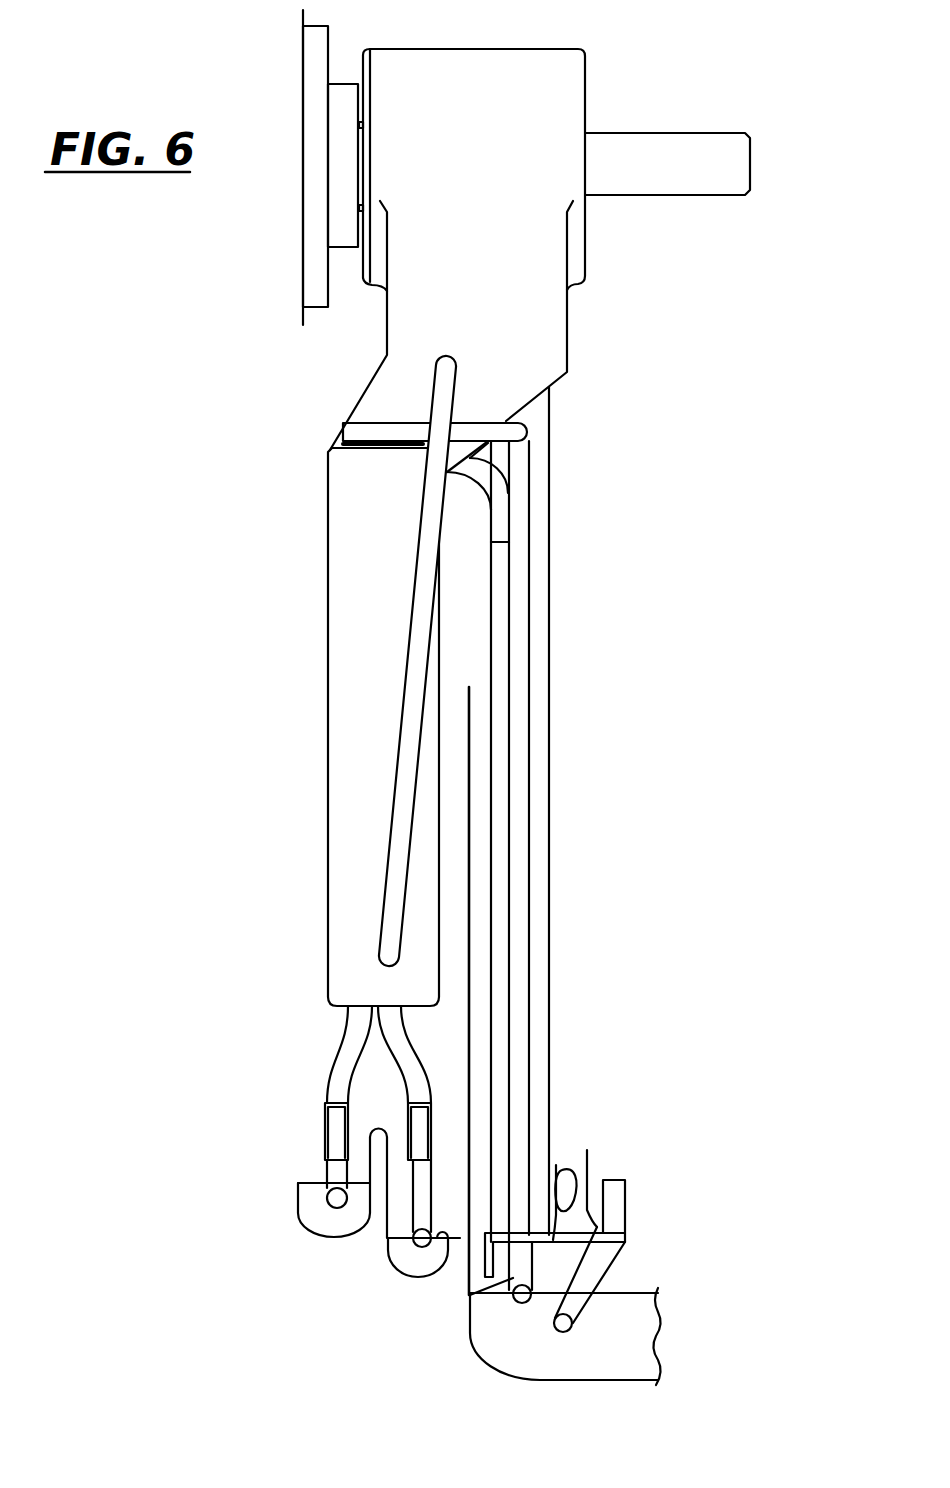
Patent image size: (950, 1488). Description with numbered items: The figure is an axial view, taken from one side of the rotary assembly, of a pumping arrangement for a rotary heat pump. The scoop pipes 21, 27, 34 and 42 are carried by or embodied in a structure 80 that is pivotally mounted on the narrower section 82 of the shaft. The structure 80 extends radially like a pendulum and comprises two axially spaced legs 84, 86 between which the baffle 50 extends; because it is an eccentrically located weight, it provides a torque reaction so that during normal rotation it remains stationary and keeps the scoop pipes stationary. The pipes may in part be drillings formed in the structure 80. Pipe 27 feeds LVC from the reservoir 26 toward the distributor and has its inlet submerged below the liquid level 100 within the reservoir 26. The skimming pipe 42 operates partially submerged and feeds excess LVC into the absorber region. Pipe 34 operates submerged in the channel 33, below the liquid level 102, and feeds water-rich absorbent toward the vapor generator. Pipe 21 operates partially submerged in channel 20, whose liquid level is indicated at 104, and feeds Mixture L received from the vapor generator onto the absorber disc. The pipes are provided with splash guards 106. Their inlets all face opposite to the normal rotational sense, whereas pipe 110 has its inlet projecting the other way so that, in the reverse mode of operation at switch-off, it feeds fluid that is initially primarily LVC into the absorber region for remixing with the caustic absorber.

The structure 80 is at (652, 362).
The narrower section of the shaft 82 is at (662, 132).
The leg 84 is at (343, 793).
The skimming pipe 42 is at (388, 423).
The leg 86 is at (539, 938).
The baffle 50 is at (470, 890).
The pipe 34 is at (404, 690).
The splash guard 106 is at (321, 1100).
The liquid level 102 is at (307, 1181).
The channel 33 is at (317, 1218).
The pipe 21 is at (413, 1208).
The channel 20 is at (410, 1263).
The liquid level 104 is at (440, 1238).
The pipe 27 is at (625, 1200).
The liquid level 100 is at (652, 1283).
The reservoir 26 is at (609, 1370).
The pipe 110 is at (560, 1283).